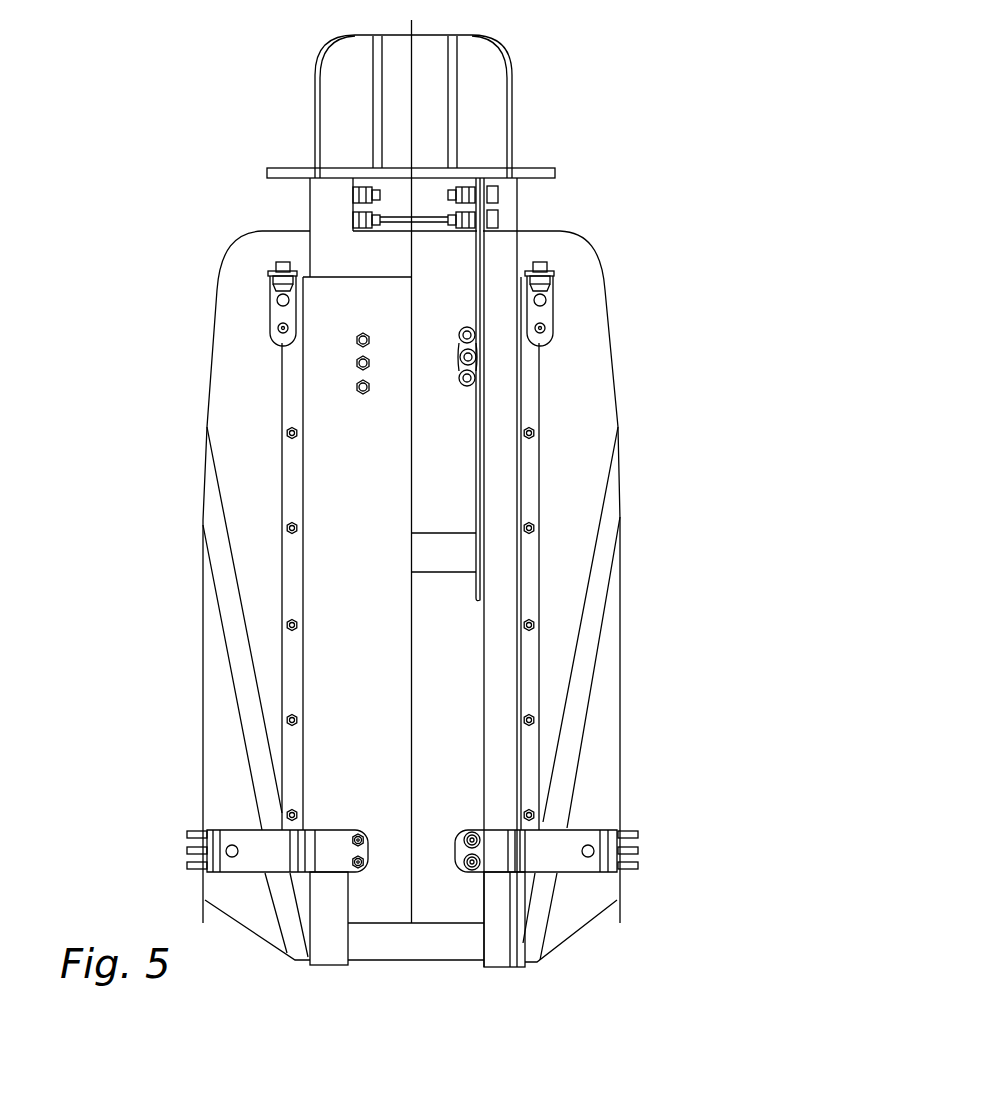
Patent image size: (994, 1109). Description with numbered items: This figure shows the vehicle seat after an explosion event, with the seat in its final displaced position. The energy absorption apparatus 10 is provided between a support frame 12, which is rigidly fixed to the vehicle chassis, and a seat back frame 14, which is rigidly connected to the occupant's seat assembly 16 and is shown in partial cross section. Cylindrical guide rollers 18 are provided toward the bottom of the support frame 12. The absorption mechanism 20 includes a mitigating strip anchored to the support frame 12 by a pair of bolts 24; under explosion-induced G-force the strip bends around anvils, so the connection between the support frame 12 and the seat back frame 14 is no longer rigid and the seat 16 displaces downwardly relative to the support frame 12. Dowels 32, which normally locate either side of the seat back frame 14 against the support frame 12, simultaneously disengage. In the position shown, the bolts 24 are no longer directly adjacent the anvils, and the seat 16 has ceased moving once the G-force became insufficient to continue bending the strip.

The energy absorption apparatus 10 is at (680, 162).
The support frame 12 is at (503, 445).
The seat back frame 14 is at (465, 505).
The seat assembly 16 is at (240, 362).
The guide rollers 18 is at (482, 840).
The absorption mechanism 20 is at (510, 367).
The bolts 24 is at (497, 215).
The dowels 32 is at (283, 267).